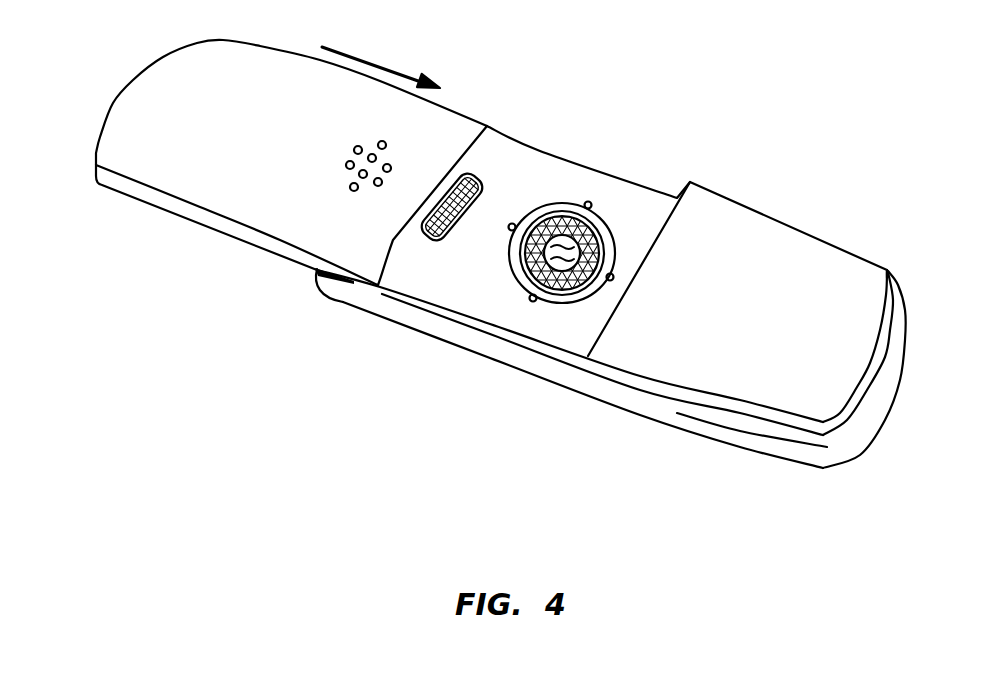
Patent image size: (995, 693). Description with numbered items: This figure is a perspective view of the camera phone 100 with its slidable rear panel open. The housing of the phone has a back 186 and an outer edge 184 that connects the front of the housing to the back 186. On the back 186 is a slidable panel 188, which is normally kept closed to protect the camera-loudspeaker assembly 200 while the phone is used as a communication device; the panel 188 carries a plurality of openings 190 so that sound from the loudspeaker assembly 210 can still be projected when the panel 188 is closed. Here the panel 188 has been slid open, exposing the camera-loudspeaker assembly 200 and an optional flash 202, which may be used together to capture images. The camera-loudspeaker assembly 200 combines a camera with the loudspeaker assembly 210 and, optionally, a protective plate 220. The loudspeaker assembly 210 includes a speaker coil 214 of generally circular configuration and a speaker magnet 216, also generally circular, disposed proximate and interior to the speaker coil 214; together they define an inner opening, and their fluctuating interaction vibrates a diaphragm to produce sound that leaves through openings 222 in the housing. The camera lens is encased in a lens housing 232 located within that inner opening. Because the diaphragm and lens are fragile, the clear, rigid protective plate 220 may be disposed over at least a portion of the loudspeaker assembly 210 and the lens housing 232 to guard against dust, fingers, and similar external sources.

The camera phone 100 is at (482, 276).
The outer edge 184 is at (702, 432).
The back 186 is at (806, 250).
The slidable panel 188 is at (190, 112).
The openings 190 is at (310, 178).
The camera-loudspeaker assembly 200 is at (650, 131).
The flash 202 is at (471, 173).
The loudspeaker assembly 210 is at (522, 264).
The speaker coil 214 is at (543, 297).
The speaker magnet 216 is at (568, 292).
The protective plate 220 is at (533, 212).
The openings 222 is at (528, 300).
The lens housing 232 is at (580, 237).